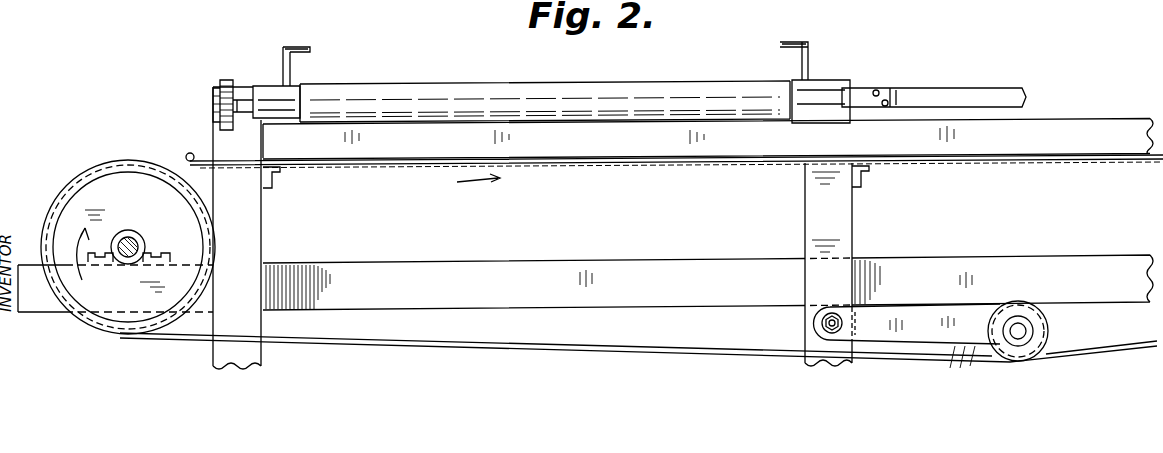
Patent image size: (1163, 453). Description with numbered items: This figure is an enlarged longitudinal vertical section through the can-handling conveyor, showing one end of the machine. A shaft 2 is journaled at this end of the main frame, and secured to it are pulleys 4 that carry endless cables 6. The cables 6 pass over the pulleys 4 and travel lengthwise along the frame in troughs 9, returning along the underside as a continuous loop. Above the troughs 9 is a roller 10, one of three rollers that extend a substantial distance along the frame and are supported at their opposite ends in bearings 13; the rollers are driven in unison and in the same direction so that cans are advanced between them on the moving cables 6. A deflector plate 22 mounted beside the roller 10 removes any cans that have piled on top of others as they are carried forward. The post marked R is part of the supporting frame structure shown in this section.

The shaft 2 is at (138, 247).
The pulleys 4 is at (98, 195).
The endless cables 6 is at (196, 161).
The troughs 9 is at (1073, 128).
The roller 10 is at (537, 60).
The bearings 13 is at (266, 97).
The deflector plates 22 is at (957, 92).
The post R is at (222, 350).